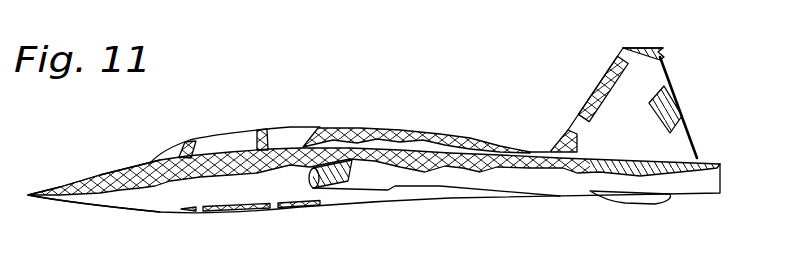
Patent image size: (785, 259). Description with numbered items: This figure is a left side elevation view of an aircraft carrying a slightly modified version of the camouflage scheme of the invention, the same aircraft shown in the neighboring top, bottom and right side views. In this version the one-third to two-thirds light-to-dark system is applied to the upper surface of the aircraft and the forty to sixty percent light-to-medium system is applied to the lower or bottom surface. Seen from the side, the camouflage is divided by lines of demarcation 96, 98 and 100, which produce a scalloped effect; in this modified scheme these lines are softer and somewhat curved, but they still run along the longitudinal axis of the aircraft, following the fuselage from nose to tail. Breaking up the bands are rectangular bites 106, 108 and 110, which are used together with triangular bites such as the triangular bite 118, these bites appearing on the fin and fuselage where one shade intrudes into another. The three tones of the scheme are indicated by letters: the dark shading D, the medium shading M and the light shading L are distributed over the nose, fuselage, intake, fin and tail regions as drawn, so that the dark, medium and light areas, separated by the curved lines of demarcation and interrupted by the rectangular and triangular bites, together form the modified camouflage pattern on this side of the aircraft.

The line of demarcation 96 is at (153, 186).
The line of demarcation 98 is at (432, 146).
The line of demarcation 100 is at (516, 171).
The rectangular bite 106 is at (609, 62).
The rectangular bite 108 is at (556, 142).
The rectangular bite 110 is at (682, 115).
The triangular bite 118 is at (662, 46).
The dark shading D is at (97, 174).
The medium shading M is at (337, 180).
The light shading L is at (220, 200).